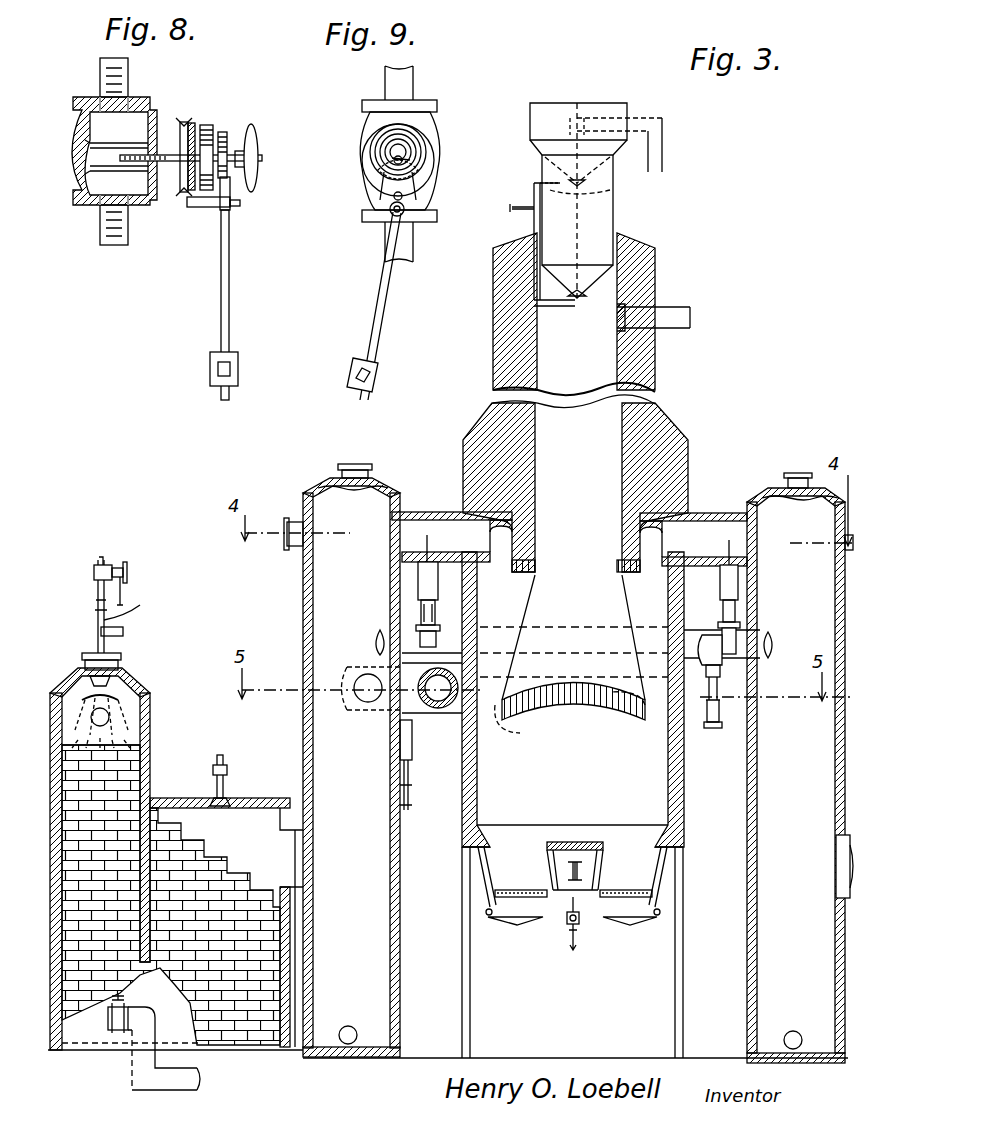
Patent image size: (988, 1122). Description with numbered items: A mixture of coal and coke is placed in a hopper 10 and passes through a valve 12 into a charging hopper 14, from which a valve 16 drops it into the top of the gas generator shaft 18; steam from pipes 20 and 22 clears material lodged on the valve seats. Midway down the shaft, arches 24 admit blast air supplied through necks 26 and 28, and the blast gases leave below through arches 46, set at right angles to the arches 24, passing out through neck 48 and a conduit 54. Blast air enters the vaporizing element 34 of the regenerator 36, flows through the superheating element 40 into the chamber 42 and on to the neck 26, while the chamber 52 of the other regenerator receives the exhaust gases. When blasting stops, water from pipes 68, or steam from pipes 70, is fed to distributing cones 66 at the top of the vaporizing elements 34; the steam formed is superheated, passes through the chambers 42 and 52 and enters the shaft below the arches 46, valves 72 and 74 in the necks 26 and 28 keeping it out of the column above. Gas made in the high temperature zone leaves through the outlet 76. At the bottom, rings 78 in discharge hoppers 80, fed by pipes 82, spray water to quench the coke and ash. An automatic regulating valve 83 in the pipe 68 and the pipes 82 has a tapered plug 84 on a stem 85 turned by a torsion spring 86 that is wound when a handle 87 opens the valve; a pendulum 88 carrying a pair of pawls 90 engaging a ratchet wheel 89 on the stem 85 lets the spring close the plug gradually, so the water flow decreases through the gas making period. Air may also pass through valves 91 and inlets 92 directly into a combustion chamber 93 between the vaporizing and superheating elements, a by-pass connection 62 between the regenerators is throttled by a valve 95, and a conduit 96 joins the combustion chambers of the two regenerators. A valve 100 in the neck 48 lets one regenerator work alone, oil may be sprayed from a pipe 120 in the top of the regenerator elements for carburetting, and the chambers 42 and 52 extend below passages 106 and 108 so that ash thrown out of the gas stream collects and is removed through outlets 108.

In FIG. 3, the hopper 10 is at (534, 108).
In FIG. 3, the valve 12 is at (610, 190).
In FIG. 3, the charging hopper 14 is at (600, 243).
In FIG. 3, the valve 16 is at (578, 302).
In FIG. 3, the gas generator shaft 18 is at (630, 296).
In FIG. 3, the steam pipe 20 is at (540, 241).
In FIG. 3, the steam pipe 22 is at (548, 308).
In FIG. 3, the arches 24 is at (620, 548).
In FIG. 3, the neck 26 is at (432, 525).
In FIG. 3, the neck 28 is at (708, 528).
In FIG. 3, the vaporizing element 34 is at (142, 700).
In FIG. 3, the regenerator 36 is at (168, 798).
In FIG. 3, the superheating element 40 is at (210, 862).
In FIG. 3, the chamber 42 is at (375, 890).
In FIG. 3, the arches 46 is at (598, 710).
In FIG. 3, the neck 48 is at (520, 733).
In FIG. 3, the chamber 52 is at (760, 863).
In FIG. 3, the conduit 54 is at (452, 702).
In FIG. 3, the by-pass connection 62 is at (443, 635).
In FIG. 3, the distributing cone 66 is at (88, 672).
In FIG. 8, the water pipe 68 is at (105, 232).
In FIG. 9, the water pipe 68 is at (386, 235).
In FIG. 3, the water pipe 68 is at (129, 604).
In FIG. 3, the steam pipe 70 is at (123, 631).
In FIG. 3, the valve 72 is at (418, 573).
In FIG. 3, the valve 74 is at (738, 580).
In FIG. 3, the outlet 76 is at (680, 315).
In FIG. 3, the rings 78 is at (640, 912).
In FIG. 3, the discharge hoppers 80 is at (608, 900).
In FIG. 3, the water pipes 82 is at (606, 880).
In FIG. 8, the automatic regulating valve 83 is at (150, 122).
In FIG. 9, the automatic regulating valve 83 is at (372, 122).
In FIG. 8, the tapered plug 84 is at (145, 190).
In FIG. 8, the stem 85 is at (178, 145).
In FIG. 9, the stem 85 is at (396, 160).
In FIG. 8, the torsion spring 86 is at (210, 125).
In FIG. 9, the torsion spring 86 is at (418, 150).
In FIG. 8, the handle 87 is at (258, 175).
In FIG. 8, the pendulum 88 is at (232, 360).
In FIG. 9, the pendulum 88 is at (385, 360).
In FIG. 8, the ratchet wheel 89 is at (228, 140).
In FIG. 9, the ratchet wheel 89 is at (416, 163).
In FIG. 8, the pawls 90 is at (232, 195).
In FIG. 9, the pawls 90 is at (405, 205).
In FIG. 3, the valve 91 is at (117, 1033).
In FIG. 3, the inlet 92 is at (130, 1045).
In FIG. 3, the combustion chamber 93 is at (160, 985).
In FIG. 3, the valve 95 is at (705, 718).
In FIG. 3, the conduit 96 is at (182, 1085).
In FIG. 3, the valve 100 is at (412, 735).
In FIG. 3, the passage 106 is at (292, 808).
In FIG. 3, the outlet 108 is at (840, 840).
In FIG. 3, the oil pipe 120 is at (226, 768).